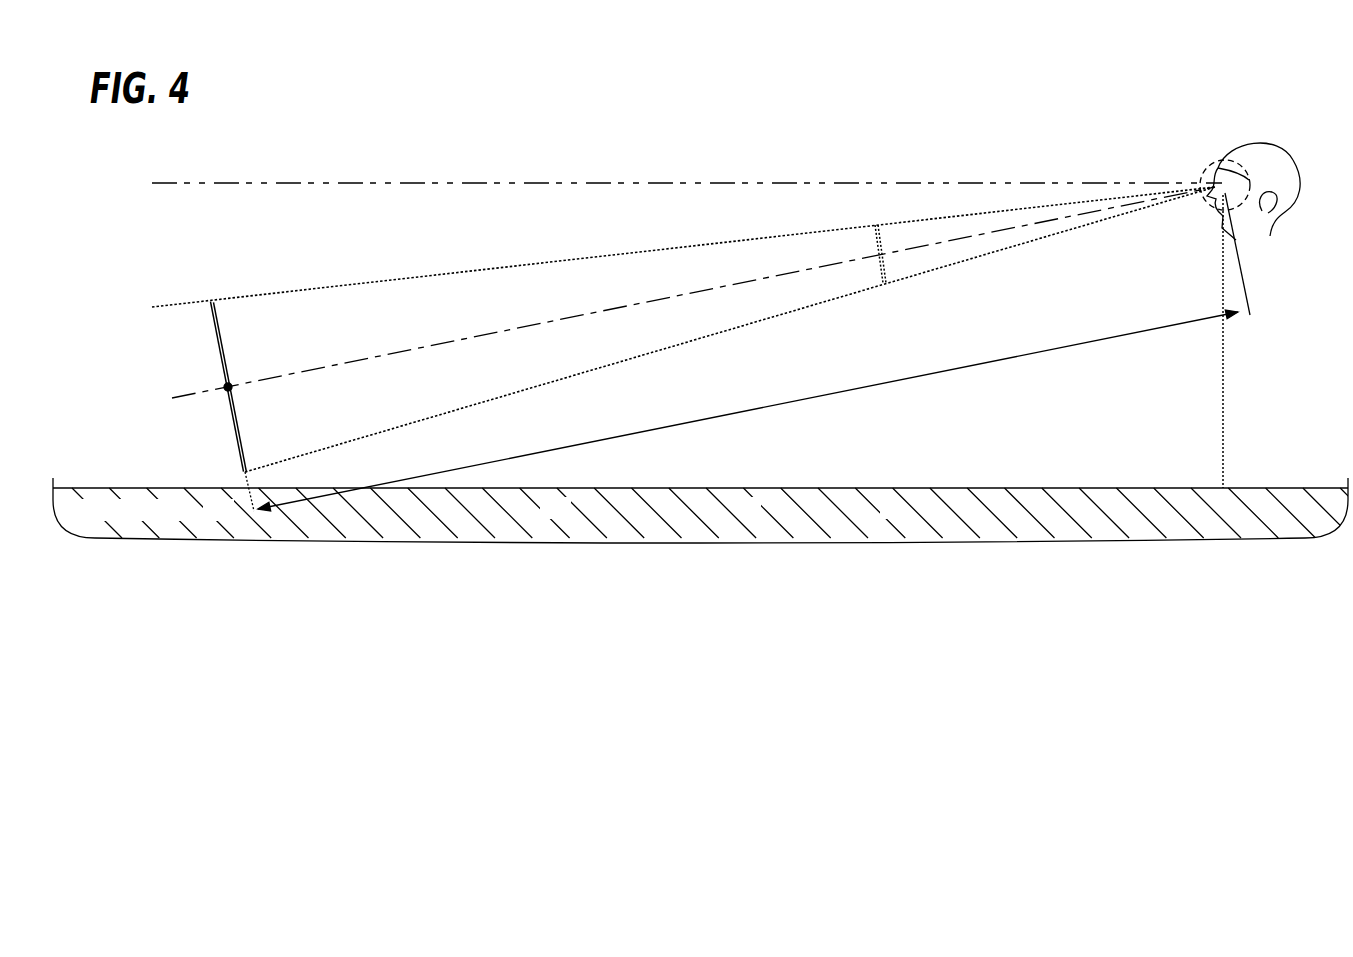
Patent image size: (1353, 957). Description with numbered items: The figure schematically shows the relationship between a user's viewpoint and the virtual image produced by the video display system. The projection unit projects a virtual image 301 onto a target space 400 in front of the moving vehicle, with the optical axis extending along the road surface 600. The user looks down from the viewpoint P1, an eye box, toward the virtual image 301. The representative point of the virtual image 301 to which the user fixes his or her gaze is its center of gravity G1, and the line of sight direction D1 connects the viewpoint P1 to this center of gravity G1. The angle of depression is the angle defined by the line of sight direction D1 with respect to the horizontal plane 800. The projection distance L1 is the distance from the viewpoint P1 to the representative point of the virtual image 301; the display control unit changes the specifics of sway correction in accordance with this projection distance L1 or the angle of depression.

The horizontal plane 800 is at (620, 182).
The target space 400 is at (317, 284).
The virtual image 301 is at (243, 427).
The road surface 600 is at (1282, 487).
The viewpoint P1 is at (1199, 162).
The line of sight direction D1 is at (405, 350).
The center of gravity G1 is at (230, 384).
The projection distance L1 is at (747, 352).